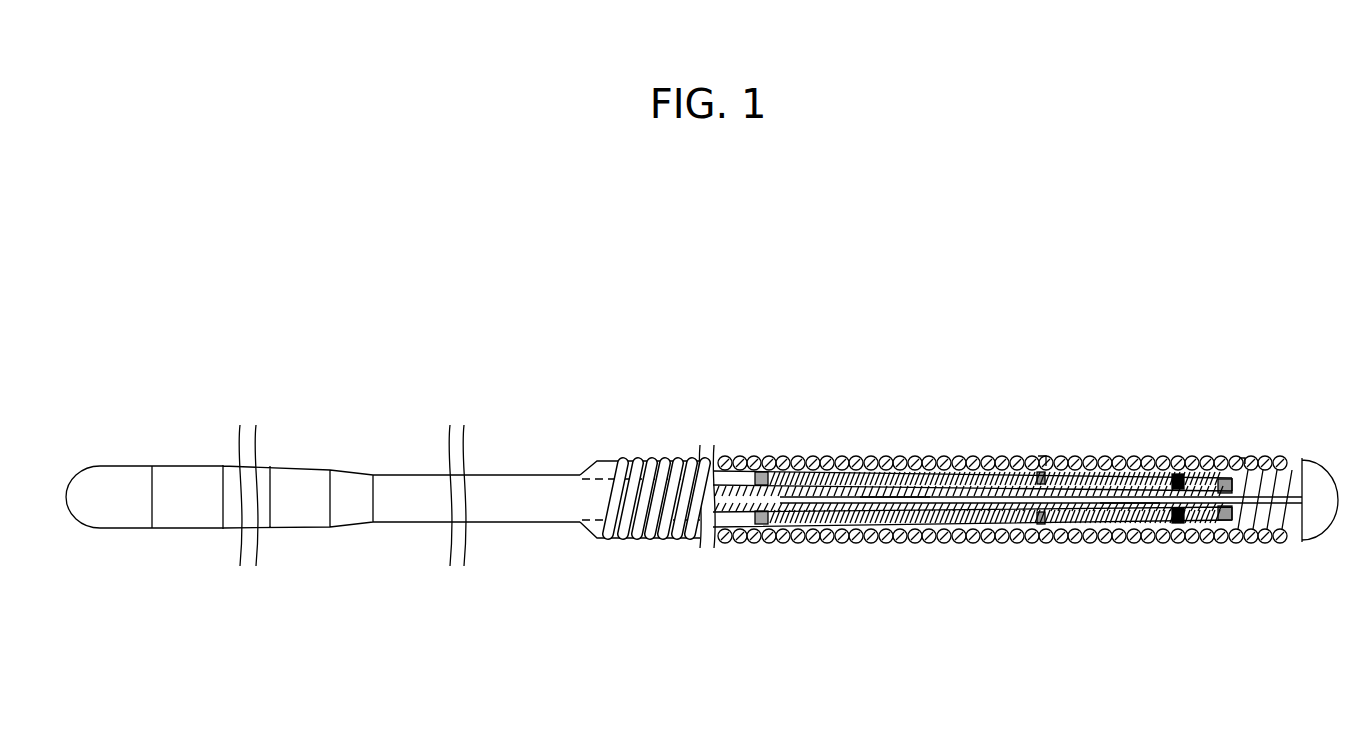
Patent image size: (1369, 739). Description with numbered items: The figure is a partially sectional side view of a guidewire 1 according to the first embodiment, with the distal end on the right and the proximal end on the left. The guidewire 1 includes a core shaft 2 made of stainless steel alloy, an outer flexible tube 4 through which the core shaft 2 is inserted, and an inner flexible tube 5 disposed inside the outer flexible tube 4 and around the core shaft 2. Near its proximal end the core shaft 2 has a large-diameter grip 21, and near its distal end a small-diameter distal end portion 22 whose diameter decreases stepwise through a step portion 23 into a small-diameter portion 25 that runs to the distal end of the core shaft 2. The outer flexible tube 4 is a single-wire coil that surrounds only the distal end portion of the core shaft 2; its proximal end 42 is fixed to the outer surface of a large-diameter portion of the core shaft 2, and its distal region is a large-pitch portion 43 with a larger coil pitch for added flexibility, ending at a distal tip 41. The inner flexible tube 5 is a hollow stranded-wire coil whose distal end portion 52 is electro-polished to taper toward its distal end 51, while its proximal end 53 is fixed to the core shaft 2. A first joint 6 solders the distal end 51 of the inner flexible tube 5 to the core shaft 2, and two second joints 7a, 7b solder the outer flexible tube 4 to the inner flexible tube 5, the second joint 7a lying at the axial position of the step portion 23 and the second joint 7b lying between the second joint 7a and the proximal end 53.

The guidewire 1 is at (1246, 341).
The core shaft 2 is at (743, 500).
The grip 21 is at (200, 517).
The distal end portion 22 is at (893, 541).
The step portion 23 is at (1043, 458).
The small-diameter portion 25 is at (1108, 541).
The outer flexible tube 4 is at (1098, 458).
The distal tip 41 is at (1313, 478).
The proximal end 42 is at (608, 538).
The large-pitch portion 43 is at (1246, 457).
The inner flexible tube 5 is at (1083, 540).
The distal end 51 is at (1226, 541).
The distal end portion 52 is at (1178, 541).
The proximal end 53 is at (768, 541).
The first joint 6 is at (1255, 541).
The second joint 7a is at (1040, 541).
The second joint 7b is at (822, 541).